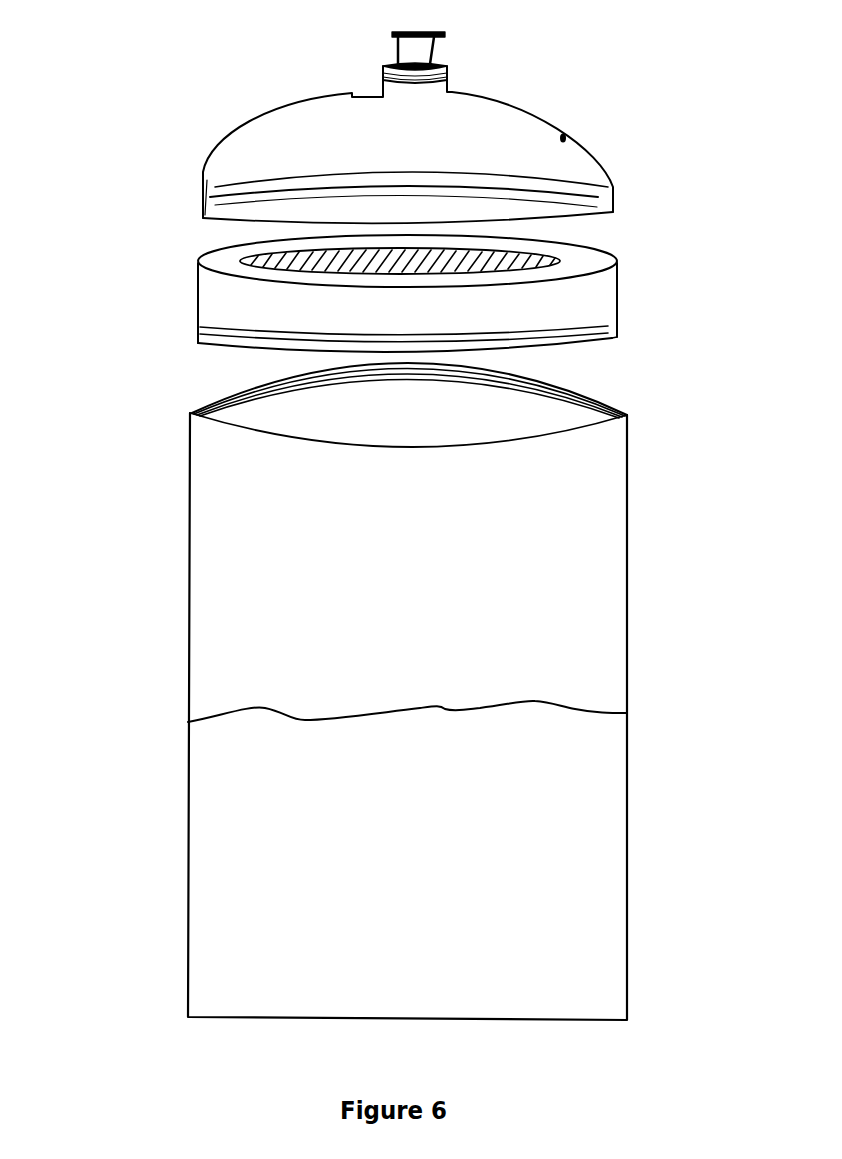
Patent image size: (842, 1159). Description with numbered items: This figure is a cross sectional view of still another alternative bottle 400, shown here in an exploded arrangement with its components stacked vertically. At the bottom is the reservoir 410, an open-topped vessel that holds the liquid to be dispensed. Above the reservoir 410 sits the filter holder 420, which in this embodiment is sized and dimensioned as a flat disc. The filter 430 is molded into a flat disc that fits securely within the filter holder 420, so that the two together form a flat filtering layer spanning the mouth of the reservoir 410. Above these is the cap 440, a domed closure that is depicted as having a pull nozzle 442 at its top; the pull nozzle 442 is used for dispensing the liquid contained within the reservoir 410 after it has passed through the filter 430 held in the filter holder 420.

The bottle 400 is at (621, 93).
The reservoir 410 is at (558, 651).
The filter holder 420 is at (582, 295).
The filter 430 is at (512, 252).
The cap 440 is at (227, 178).
The pull nozzle 442 is at (410, 44).